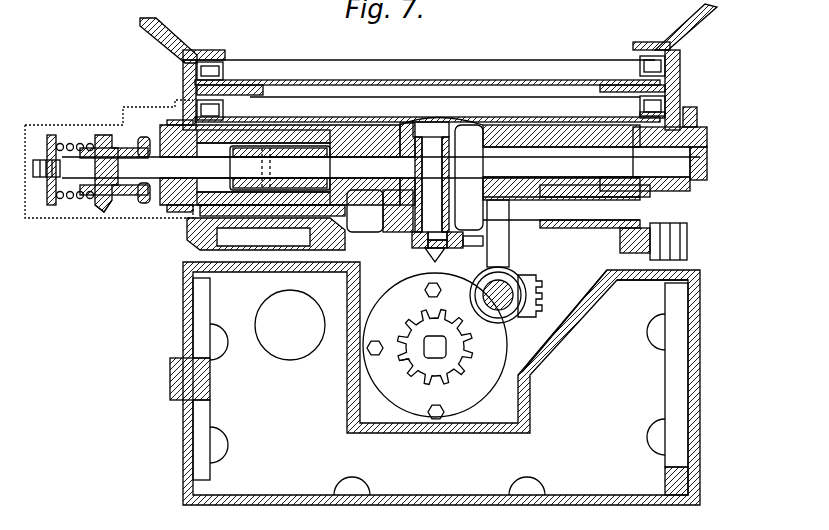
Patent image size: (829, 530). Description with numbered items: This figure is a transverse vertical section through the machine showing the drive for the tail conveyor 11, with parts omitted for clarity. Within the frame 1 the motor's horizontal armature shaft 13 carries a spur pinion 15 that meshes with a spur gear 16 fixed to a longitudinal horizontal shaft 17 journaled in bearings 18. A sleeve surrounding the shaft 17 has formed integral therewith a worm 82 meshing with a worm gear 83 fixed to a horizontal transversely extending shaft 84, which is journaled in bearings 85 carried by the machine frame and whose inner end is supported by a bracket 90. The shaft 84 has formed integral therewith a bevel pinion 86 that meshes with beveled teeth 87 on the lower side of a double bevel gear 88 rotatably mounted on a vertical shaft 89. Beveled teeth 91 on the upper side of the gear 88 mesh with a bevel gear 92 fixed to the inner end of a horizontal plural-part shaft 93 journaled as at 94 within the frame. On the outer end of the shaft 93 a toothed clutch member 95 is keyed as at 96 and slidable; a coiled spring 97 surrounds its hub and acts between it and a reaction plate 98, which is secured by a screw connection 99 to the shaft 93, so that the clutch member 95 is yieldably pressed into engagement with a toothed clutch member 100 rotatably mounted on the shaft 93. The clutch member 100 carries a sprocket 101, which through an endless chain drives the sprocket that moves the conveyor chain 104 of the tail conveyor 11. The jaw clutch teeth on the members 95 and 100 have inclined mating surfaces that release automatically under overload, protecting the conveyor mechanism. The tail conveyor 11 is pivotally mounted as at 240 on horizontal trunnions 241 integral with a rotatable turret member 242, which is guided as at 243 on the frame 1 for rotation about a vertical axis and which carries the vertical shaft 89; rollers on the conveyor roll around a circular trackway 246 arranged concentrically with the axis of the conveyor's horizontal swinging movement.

The frame 1 is at (182, 270).
The tail conveyor 11 is at (645, 42).
The armature shaft 13 is at (442, 355).
The spur pinion 15 is at (419, 364).
The spur gear 16 is at (541, 311).
The horizontal shaft 17 is at (501, 300).
The bearings 18 is at (408, 328).
The worm 82 is at (532, 292).
The worm gear 83 is at (540, 230).
The transversely extending shaft 84 is at (579, 264).
The bearings 85 is at (620, 230).
The bevel pinion 86 is at (428, 291).
The beveled teeth 87 is at (425, 250).
The double bevel gear 88 is at (400, 208).
The vertical shaft 89 is at (438, 192).
The bracket 90 is at (458, 249).
The beveled teeth 91 is at (483, 210).
The bevel gear 92 is at (398, 150).
The plural-part shaft 93 is at (340, 160).
The journal 94 is at (357, 160).
The toothed clutch member 95 is at (102, 135).
The key 96 is at (84, 196).
The coiled spring 97 is at (76, 143).
The reaction plate 98 is at (50, 135).
The screw connection 99 is at (54, 205).
The toothed clutch member 100 is at (108, 212).
The sprocket 101 is at (146, 137).
The conveyor chain 104 is at (668, 55).
The pivotal mounting 240 is at (215, 140).
The horizontal trunnions 241 is at (250, 125).
The turret member 242 is at (330, 234).
The guide 243 is at (350, 226).
The circular trackway 246 is at (707, 181).